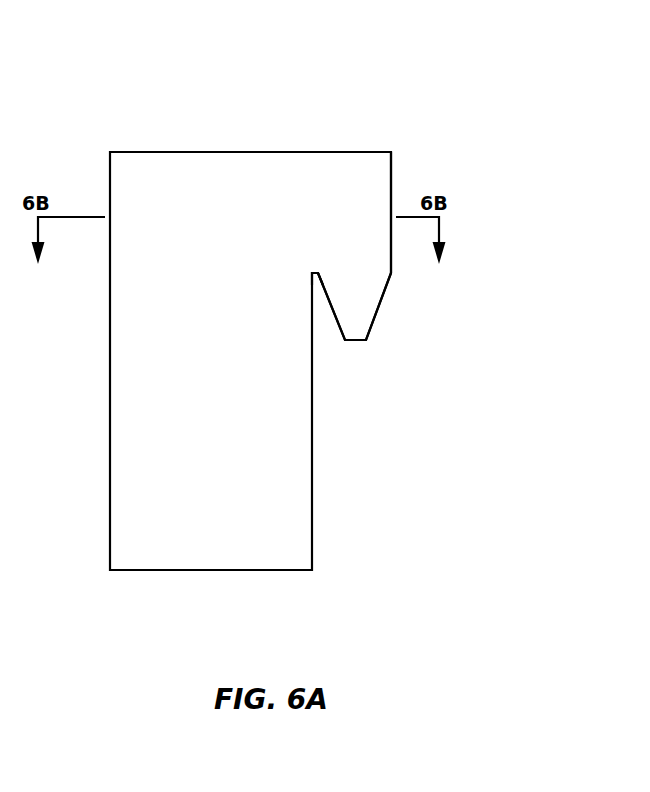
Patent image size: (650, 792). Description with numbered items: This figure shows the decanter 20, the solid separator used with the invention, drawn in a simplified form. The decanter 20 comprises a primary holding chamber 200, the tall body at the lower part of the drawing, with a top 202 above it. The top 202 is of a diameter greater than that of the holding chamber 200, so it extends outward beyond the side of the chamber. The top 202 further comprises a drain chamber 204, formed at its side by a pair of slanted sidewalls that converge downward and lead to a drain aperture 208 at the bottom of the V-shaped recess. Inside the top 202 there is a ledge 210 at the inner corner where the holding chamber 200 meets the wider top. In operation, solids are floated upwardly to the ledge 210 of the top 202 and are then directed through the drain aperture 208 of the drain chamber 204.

The decanter 20 is at (101, 83).
The primary holding chamber 200 is at (148, 438).
The top 202 is at (290, 130).
The drain chamber 204 is at (397, 163).
The drain aperture 208 is at (378, 312).
The ledge 210 is at (314, 272).